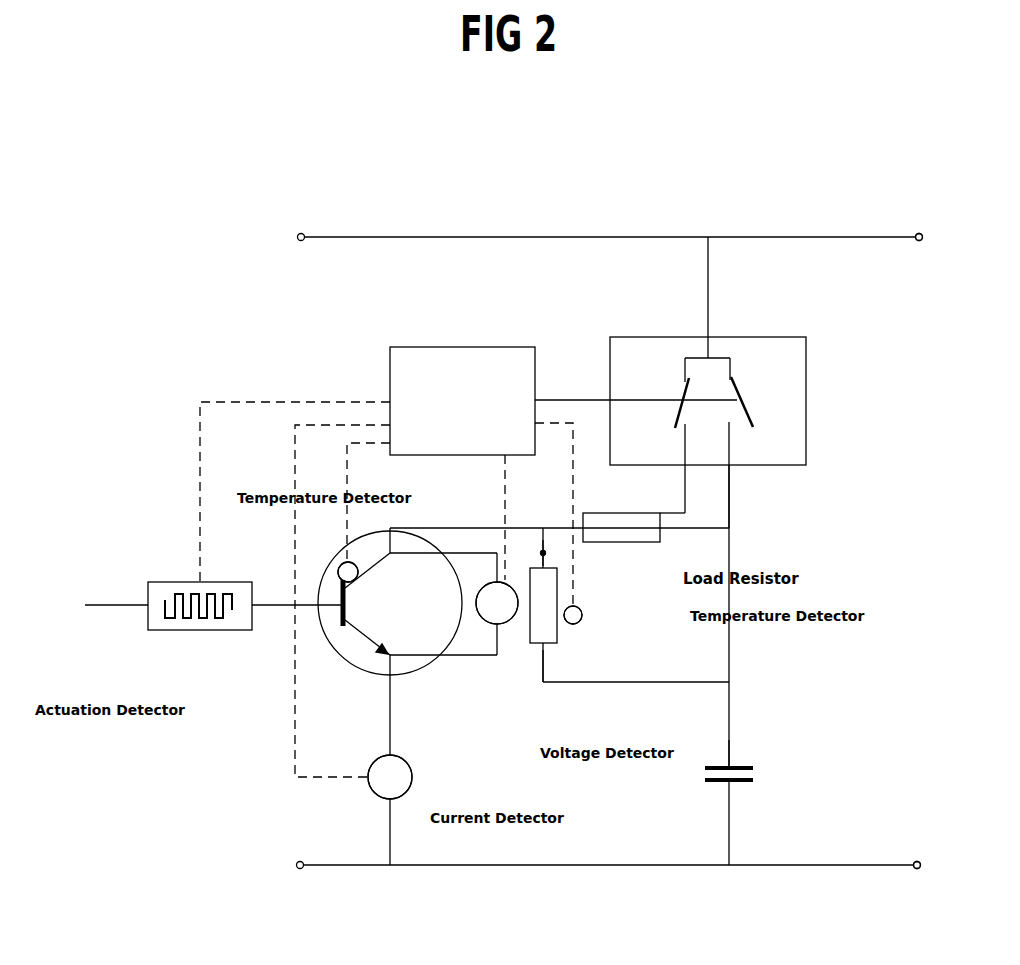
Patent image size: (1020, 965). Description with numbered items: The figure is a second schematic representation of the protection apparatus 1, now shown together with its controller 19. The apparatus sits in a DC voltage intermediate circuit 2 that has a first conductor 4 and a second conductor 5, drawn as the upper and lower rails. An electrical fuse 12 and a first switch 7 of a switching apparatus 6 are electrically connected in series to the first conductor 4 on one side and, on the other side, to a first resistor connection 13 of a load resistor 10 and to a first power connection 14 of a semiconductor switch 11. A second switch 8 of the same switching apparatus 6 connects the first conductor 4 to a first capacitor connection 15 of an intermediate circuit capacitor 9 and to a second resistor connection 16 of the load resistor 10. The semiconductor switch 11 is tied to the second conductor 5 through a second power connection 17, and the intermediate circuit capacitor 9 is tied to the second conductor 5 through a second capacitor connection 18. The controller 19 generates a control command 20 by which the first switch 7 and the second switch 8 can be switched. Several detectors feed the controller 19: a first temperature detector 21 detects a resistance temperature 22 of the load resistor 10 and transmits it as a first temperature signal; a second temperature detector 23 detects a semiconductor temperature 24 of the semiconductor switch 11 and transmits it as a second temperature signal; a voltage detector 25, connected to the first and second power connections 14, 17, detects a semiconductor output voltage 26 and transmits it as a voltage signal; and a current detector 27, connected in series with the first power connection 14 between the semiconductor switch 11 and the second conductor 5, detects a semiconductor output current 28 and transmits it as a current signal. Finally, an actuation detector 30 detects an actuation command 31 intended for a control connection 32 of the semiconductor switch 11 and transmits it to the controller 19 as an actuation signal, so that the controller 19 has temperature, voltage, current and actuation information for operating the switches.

The protection apparatus 1 is at (820, 567).
The DC voltage intermediate circuit 2 is at (848, 235).
The first conductor 4 is at (350, 234).
The second conductor 5 is at (336, 868).
The switching apparatus 6 is at (806, 405).
The first switch 7 is at (681, 384).
The second switch 8 is at (740, 384).
The intermediate circuit capacitor 9 is at (718, 762).
The load resistor 10 is at (557, 580).
The semiconductor switch 11 is at (437, 663).
The electrical fuse 12 is at (729, 513).
The first resistor connection 13 is at (545, 553).
The first power connection 14 is at (396, 558).
The first capacitor connection 15 is at (733, 750).
The second resistor connection 16 is at (543, 655).
The second power connection 17 is at (397, 658).
The second capacitor connection 18 is at (733, 800).
The controller 19 is at (449, 346).
The control command 20 is at (565, 398).
The first temperature detector 21 is at (582, 615).
The resistance temperature 22 is at (627, 616).
The second temperature detector 23 is at (352, 563).
The semiconductor temperature 24 is at (284, 547).
The voltage detector 25 is at (510, 622).
The semiconductor output voltage 26 is at (522, 665).
The current detector 27 is at (412, 777).
The semiconductor output current 28 is at (442, 777).
The actuation detector 30 is at (165, 635).
The actuation command 31 is at (172, 581).
The control connection 32 is at (334, 628).